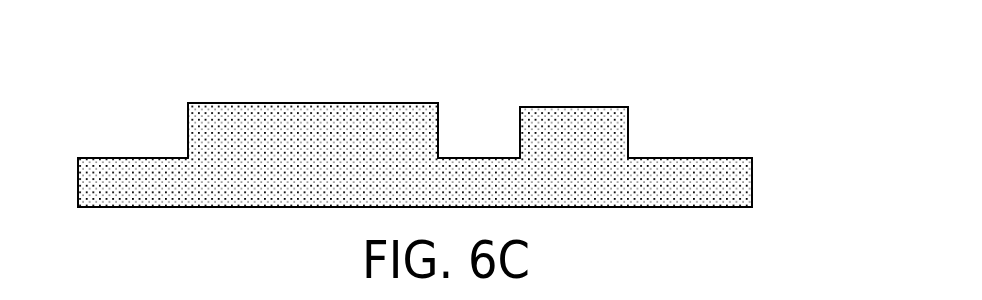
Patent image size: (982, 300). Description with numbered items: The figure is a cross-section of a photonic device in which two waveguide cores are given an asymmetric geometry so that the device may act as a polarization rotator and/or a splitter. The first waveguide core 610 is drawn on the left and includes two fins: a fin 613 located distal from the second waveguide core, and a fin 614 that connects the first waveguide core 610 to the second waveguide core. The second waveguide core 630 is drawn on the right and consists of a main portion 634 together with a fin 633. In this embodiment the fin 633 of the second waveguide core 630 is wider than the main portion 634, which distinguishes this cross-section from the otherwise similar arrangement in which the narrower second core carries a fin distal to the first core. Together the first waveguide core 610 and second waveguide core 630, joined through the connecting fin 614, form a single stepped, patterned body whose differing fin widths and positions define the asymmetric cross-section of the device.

The first waveguide core 610 is at (426, 112).
The fin 613 is at (153, 192).
The fin 614 is at (473, 185).
The second waveguide core 630 is at (671, 112).
The main portion 634 is at (608, 119).
The fin 633 is at (733, 179).